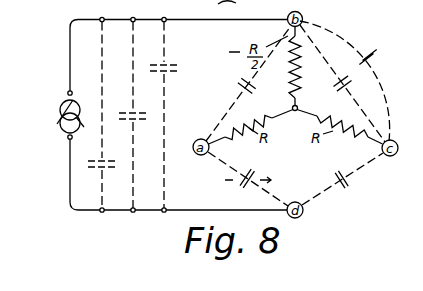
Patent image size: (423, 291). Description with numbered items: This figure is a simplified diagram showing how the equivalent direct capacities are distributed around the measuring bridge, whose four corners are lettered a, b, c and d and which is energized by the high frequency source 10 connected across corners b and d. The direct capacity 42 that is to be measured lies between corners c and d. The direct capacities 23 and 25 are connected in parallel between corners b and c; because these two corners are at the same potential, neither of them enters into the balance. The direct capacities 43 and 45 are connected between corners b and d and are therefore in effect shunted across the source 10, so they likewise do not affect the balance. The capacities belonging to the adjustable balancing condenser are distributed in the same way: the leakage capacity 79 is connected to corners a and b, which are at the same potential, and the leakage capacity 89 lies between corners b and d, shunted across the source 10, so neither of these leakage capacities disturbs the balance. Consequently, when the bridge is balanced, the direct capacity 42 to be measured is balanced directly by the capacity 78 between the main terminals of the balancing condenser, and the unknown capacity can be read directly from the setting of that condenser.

The high frequency source 10 is at (60, 113).
The direct capacity 43 is at (107, 115).
The leakage capacity 89 is at (138, 115).
The direct capacity 45 is at (170, 64).
The leakage capacity 79 is at (248, 83).
The direct capacity 23 is at (337, 86).
The balancing condenser capacity 78 is at (251, 175).
The direct capacity to be measured 42 is at (334, 177).
The direct capacity 25 is at (348, 81).